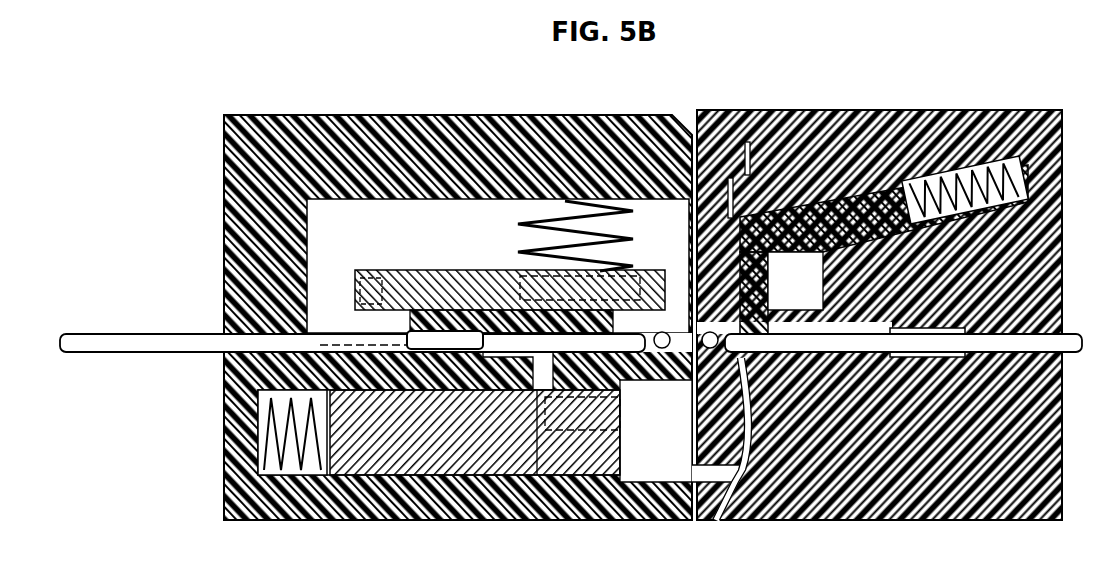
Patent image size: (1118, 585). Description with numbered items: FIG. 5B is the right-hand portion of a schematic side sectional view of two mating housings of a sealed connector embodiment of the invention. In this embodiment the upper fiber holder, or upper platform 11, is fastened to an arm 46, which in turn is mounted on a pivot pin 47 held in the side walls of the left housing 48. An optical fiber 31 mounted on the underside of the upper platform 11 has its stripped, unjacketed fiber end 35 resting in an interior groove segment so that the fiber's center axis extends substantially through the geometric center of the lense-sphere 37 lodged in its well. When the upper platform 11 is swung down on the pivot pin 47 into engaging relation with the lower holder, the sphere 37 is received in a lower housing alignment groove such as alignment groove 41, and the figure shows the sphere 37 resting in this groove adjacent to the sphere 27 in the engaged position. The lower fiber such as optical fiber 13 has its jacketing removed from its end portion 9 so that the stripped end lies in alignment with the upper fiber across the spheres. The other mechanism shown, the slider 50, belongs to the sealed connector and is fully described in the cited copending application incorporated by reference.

The left housing 48 is at (224, 270).
The pivot pin 47 is at (376, 278).
The arm 46 is at (432, 276).
The unjacketed fiber end 35 is at (522, 318).
The alignment groove 41 is at (660, 322).
The lense-sphere 37 is at (666, 332).
The upper fiber holder 11 is at (407, 326).
The optical fiber 31 is at (172, 353).
The end portion of fiber 9 is at (835, 333).
The slider 50 is at (800, 256).
The optical fiber 13 is at (1066, 338).
The sphere 27 is at (765, 492).